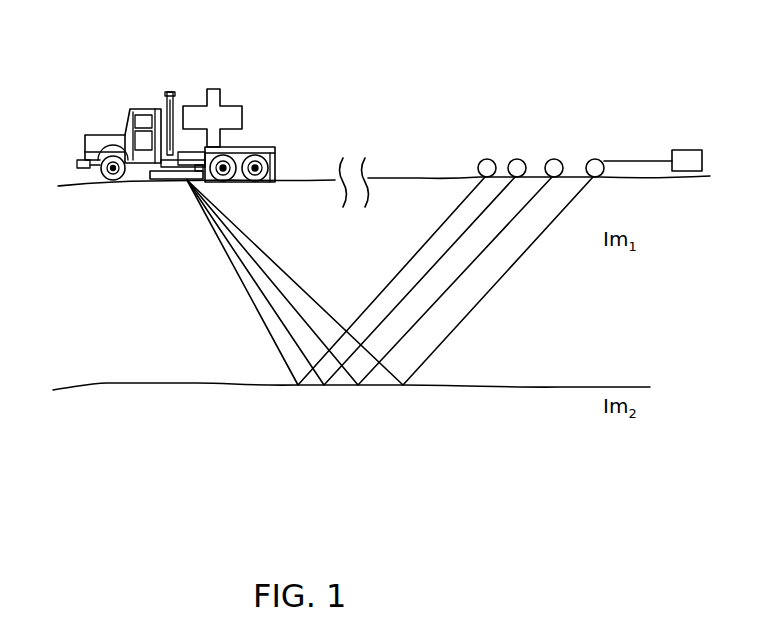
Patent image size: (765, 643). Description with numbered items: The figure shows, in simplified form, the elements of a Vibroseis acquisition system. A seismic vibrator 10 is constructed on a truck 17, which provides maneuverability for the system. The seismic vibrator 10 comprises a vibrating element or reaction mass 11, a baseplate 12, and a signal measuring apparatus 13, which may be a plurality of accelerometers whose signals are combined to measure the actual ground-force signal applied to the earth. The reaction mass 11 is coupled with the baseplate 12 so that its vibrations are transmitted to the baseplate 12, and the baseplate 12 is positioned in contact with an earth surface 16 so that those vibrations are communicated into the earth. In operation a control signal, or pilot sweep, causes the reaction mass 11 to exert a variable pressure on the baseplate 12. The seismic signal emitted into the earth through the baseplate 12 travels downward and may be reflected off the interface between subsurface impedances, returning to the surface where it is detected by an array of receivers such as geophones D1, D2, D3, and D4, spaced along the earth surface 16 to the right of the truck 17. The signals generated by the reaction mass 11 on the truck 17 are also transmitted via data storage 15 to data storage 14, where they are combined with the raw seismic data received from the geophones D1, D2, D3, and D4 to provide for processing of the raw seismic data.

The seismic vibrator 10 is at (101, 97).
The reaction mass 11 is at (228, 104).
The baseplate 12 is at (173, 183).
The signal measuring apparatus 13 is at (203, 181).
The data storage 14 is at (675, 150).
The data storage 15 is at (268, 147).
The earth surface 16 is at (68, 185).
The truck 17 is at (146, 109).
The geophone D1 is at (487, 152).
The geophone D2 is at (517, 152).
The geophone D3 is at (553, 152).
The geophone D4 is at (594, 152).